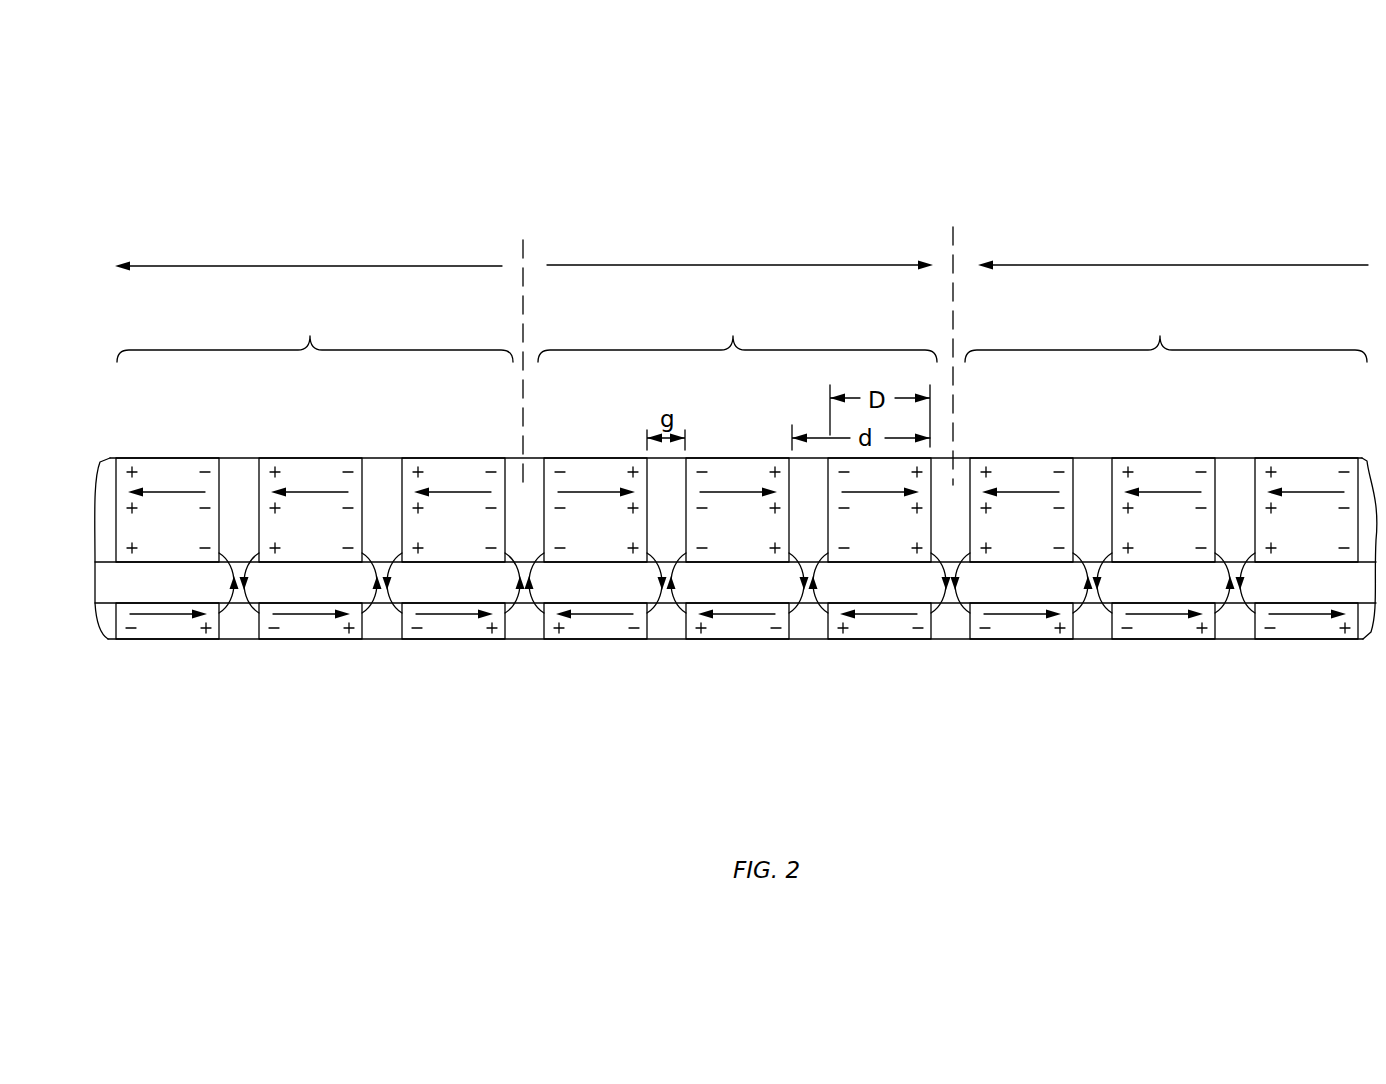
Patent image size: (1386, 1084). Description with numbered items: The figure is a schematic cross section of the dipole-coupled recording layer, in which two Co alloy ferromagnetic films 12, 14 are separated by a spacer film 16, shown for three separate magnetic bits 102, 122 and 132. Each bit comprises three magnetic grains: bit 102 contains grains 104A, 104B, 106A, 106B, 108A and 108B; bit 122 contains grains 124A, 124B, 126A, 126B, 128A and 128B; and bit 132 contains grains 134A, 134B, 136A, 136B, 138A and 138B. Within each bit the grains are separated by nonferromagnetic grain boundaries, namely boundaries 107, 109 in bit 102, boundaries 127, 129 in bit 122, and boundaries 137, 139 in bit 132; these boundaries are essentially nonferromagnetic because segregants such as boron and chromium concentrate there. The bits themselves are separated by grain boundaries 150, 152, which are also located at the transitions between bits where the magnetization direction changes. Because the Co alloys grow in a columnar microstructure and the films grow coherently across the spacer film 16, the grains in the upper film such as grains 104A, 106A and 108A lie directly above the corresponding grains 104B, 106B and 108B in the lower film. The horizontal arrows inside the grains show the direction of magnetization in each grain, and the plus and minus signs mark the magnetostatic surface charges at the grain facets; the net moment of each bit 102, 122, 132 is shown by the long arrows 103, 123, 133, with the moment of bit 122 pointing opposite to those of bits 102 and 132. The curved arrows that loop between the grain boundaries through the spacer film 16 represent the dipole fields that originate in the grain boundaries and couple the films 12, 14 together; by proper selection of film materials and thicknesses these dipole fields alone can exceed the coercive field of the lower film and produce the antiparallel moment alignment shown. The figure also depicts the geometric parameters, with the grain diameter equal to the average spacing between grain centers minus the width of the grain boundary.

The ferromagnetic film 12 is at (110, 484).
The ferromagnetic film 14 is at (99, 607).
The spacer film 16 is at (106, 588).
The magnetic bit 102 is at (315, 329).
The net moment arrow 103 is at (277, 266).
The magnetic grain 104A is at (138, 458).
The magnetic grain 104B is at (183, 632).
The magnetic grain 106A is at (282, 458).
The magnetic grain 106B is at (335, 632).
The grain boundary 107 is at (240, 630).
The magnetic grain 108A is at (425, 458).
The magnetic grain 108B is at (467, 632).
The grain boundary 109 is at (380, 630).
The magnetic bit 122 is at (737, 329).
The net moment arrow 123 is at (690, 265).
The magnetic grain 124A is at (572, 458).
The magnetic grain 124B is at (607, 632).
The magnetic grain 126A is at (714, 458).
The magnetic grain 126B is at (748, 632).
The grain boundary 127 is at (655, 632).
The magnetic grain 128A is at (848, 560).
The magnetic grain 128B is at (887, 632).
The grain boundary 129 is at (810, 632).
The magnetic bit 132 is at (1166, 329).
The net moment arrow 133 is at (1142, 265).
The magnetic grain 134A is at (1012, 458).
The magnetic grain 134B is at (1028, 632).
The magnetic grain 136A is at (1155, 458).
The magnetic grain 136B is at (1173, 632).
The grain boundary 137 is at (1088, 632).
The magnetic grain 138A is at (1280, 458).
The magnetic grain 138B is at (1318, 632).
The grain boundary 139 is at (1233, 632).
The grain boundary 150 is at (525, 258).
The grain boundary 152 is at (955, 250).